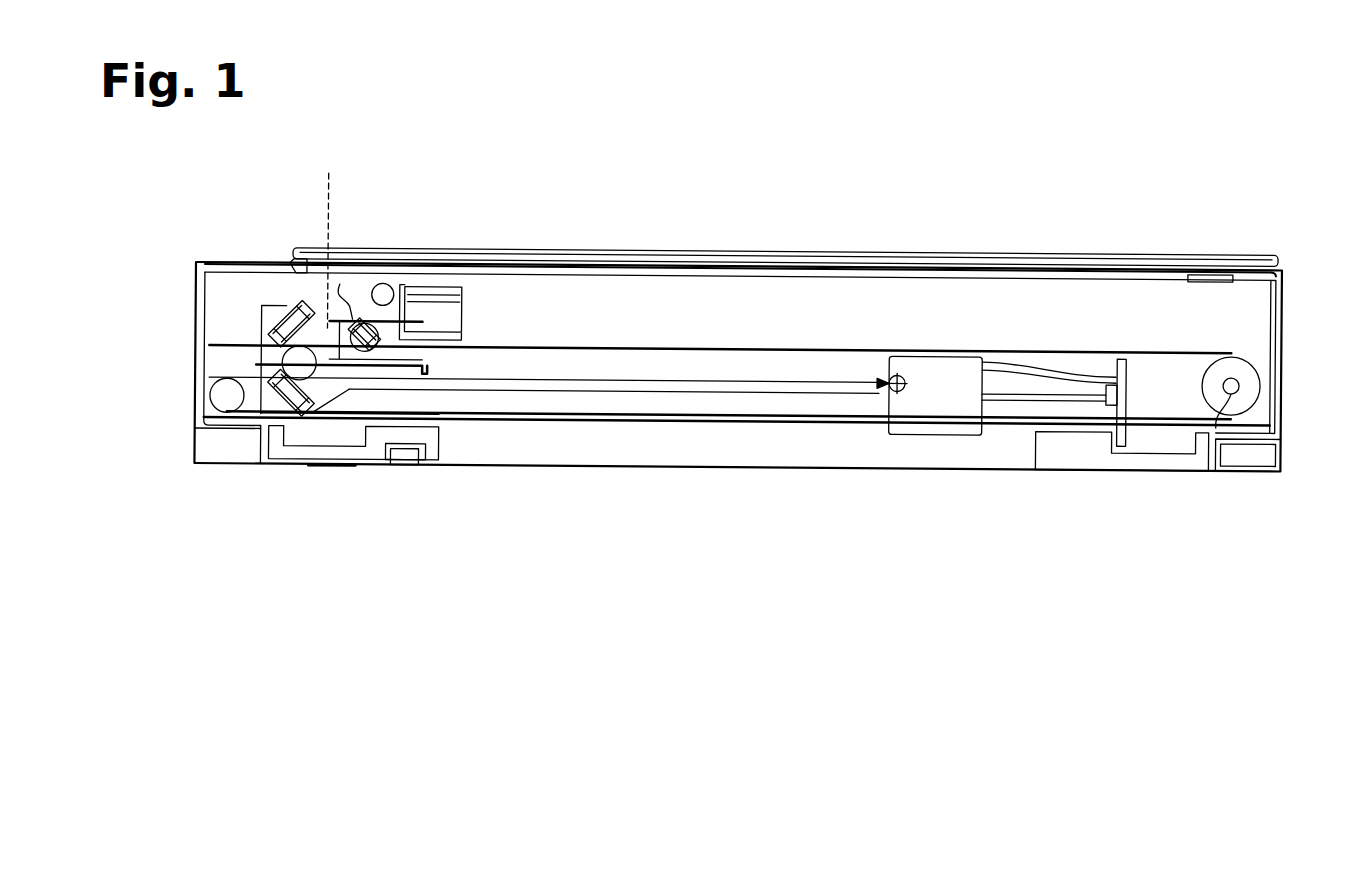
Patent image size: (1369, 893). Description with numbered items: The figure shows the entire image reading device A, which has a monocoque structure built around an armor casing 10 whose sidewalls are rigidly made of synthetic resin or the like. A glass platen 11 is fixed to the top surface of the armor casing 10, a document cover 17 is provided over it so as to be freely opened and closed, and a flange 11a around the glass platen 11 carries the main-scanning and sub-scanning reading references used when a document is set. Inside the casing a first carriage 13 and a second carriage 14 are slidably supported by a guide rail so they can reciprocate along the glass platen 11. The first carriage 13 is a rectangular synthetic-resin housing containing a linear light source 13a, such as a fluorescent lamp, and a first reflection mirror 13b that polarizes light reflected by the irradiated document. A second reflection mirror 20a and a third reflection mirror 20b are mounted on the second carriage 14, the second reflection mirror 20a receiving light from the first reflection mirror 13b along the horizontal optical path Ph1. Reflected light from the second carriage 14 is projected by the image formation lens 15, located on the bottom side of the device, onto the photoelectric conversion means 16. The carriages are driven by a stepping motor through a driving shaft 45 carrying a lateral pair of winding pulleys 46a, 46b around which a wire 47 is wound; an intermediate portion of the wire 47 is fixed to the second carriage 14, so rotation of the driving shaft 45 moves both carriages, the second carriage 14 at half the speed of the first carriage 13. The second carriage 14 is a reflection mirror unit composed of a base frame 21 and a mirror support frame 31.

The image reading device A is at (977, 140).
The armor casing 10 is at (1284, 327).
The glass platen 11 is at (1113, 277).
The flange 11a is at (302, 261).
The first carriage 13 is at (407, 279).
The linear light source 13a is at (388, 284).
The first reflection mirror 13b is at (344, 288).
The second carriage 14 is at (262, 298).
The condensing lens 15 is at (942, 421).
The photoelectric conversion means 16 is at (1130, 385).
The document cover 17 is at (1018, 251).
The second reflection mirror 20a is at (262, 320).
The third reflection mirror 20b is at (264, 410).
The base frame 21 is at (432, 367).
The mirror support frame 31 is at (262, 365).
The driving shaft 45 is at (1257, 426).
The winding pulley 46a is at (1268, 319).
The winding pulley 46b is at (1232, 370).
The wire 47 is at (733, 410).
The horizontal optical path Ph1 is at (330, 240).